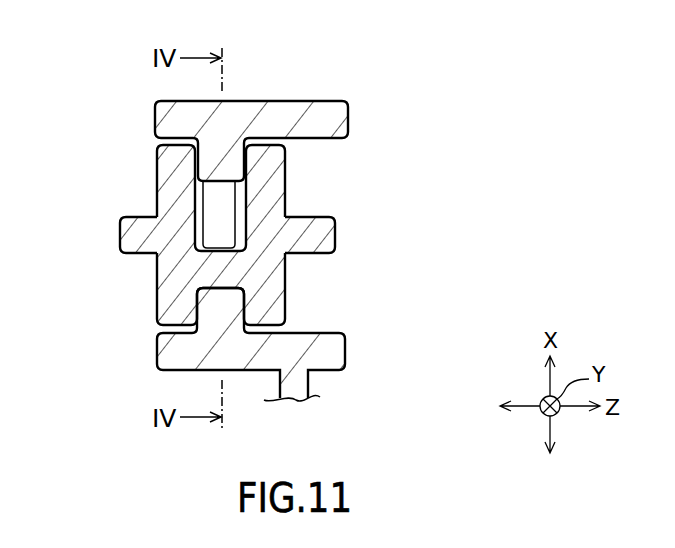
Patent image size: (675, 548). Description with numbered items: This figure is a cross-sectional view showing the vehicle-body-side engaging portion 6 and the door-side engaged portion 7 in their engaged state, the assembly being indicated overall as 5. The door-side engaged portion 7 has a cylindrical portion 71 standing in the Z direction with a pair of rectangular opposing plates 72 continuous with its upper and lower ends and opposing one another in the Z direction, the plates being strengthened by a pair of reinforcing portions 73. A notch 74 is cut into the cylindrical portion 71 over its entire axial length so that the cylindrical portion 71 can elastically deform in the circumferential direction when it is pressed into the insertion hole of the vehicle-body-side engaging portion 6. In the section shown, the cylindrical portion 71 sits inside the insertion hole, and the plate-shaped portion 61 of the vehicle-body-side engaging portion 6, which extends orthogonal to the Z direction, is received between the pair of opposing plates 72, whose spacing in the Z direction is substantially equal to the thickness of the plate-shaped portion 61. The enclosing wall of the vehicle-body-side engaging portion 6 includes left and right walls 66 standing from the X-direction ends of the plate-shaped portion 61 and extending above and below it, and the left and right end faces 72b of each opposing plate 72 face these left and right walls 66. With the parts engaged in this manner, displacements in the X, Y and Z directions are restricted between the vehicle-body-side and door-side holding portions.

The optical unit 5 is at (468, 62).
The vehicle-body-side engaging portion 6 is at (267, 114).
The plate-shaped portion 61 is at (232, 160).
The left and right walls 66 is at (243, 112).
The door-side engaged portion 7 is at (222, 252).
The cylindrical portion 71 is at (228, 270).
The opposing plates 72 is at (222, 252).
The left and right end faces 72b is at (285, 146).
The reinforcing portions 73 is at (322, 239).
The notch 74 is at (232, 203).